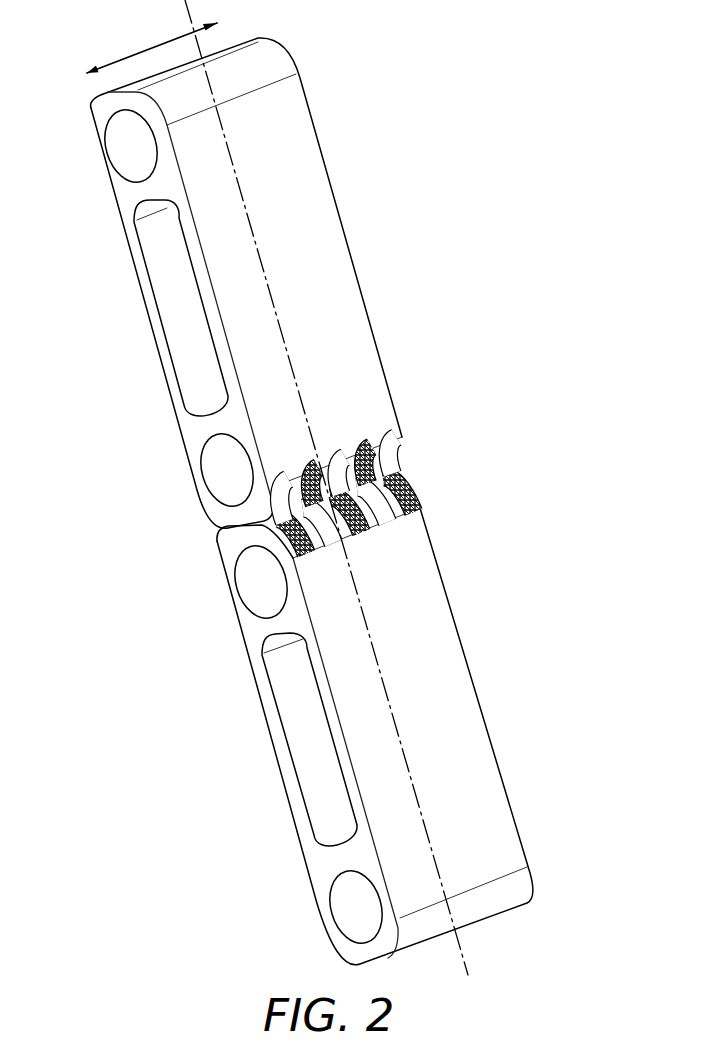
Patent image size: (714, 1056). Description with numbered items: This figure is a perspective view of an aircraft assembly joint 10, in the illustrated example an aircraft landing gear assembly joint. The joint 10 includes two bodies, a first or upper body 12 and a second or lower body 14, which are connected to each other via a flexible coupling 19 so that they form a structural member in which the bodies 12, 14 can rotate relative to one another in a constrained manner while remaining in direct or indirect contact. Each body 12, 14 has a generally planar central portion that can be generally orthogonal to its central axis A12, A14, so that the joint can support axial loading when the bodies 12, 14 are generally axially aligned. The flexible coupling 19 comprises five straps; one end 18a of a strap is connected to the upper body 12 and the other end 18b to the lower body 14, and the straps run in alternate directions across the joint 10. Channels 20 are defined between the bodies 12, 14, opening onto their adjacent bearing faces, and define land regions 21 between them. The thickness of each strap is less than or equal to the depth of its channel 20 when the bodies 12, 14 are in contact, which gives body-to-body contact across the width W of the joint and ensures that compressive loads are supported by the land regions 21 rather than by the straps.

The aircraft assembly joint 10 is at (327, 501).
The first body 12 is at (309, 71).
The second body 14 is at (503, 739).
The end of strap 18a is at (369, 450).
The end of strap 18b is at (414, 491).
The flexible coupling 19 is at (418, 466).
The channel 20 is at (385, 516).
The land region 21 is at (322, 543).
The central axis A12 is at (247, 211).
The central axis A14 is at (395, 721).
The width W is at (152, 48).